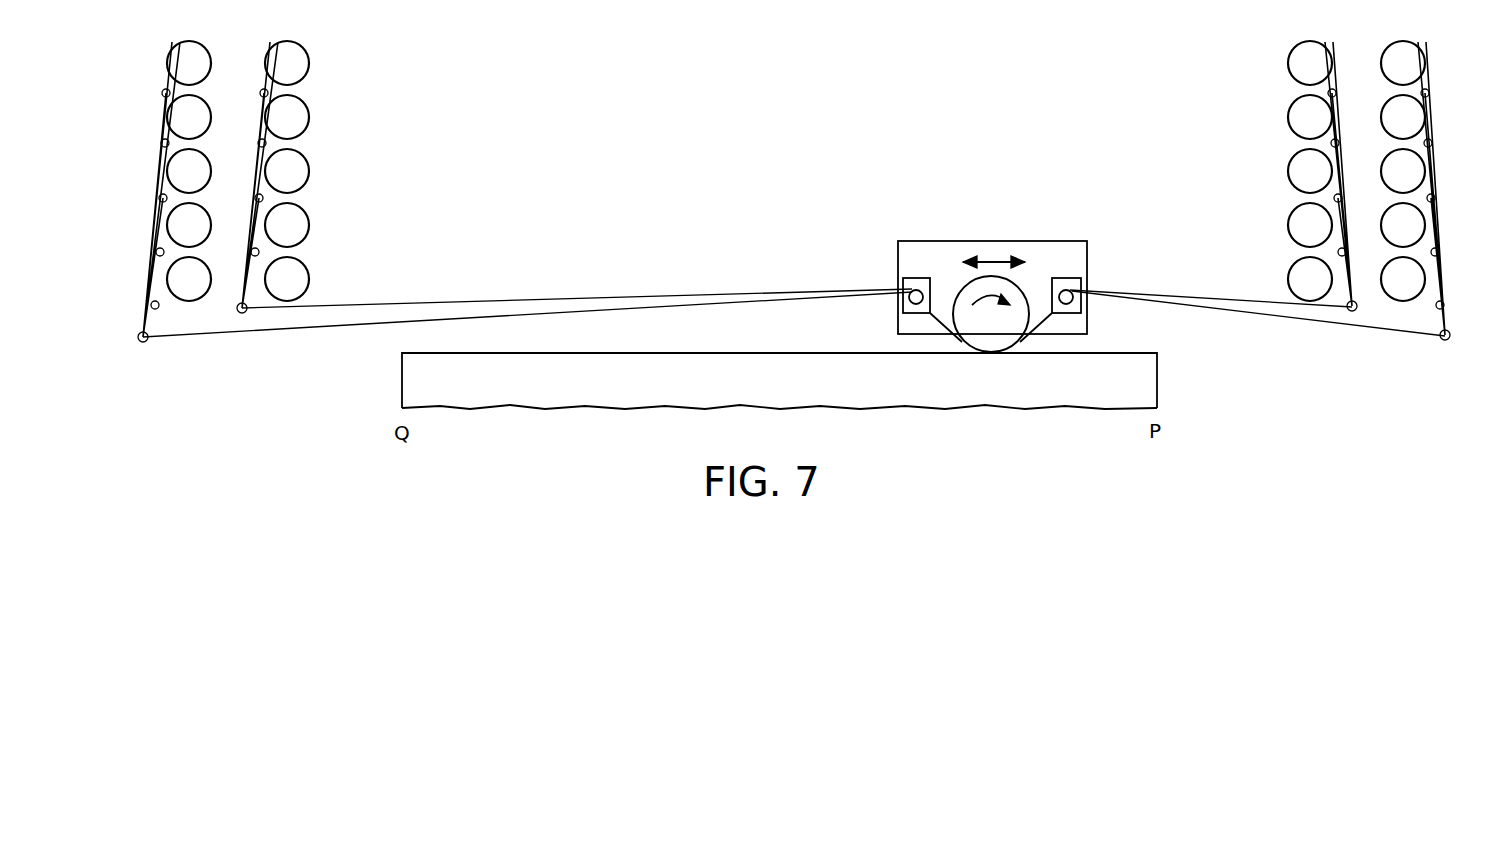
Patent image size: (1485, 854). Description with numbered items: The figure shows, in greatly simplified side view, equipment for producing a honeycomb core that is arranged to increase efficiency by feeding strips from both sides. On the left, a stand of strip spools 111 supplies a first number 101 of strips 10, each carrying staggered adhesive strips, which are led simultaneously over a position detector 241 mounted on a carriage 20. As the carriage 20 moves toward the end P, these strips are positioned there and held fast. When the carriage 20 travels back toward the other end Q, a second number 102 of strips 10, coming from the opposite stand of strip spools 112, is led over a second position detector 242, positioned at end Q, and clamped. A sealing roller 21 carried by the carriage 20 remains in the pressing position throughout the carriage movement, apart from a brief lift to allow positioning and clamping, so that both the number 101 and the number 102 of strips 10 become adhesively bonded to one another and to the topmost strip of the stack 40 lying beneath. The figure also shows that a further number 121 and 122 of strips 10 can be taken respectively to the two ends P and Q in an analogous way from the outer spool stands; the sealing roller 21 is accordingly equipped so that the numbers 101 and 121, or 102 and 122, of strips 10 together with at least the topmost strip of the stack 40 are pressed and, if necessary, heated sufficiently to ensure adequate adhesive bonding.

The strip 10 is at (792, 191).
The stand of strip spools 111 is at (306, 158).
The stand of strip spools 112 is at (1290, 165).
The first number of strips 101 is at (325, 315).
The second number of strips 102 is at (1308, 312).
The further number of strips 121 is at (187, 340).
The further number of strips 122 is at (1408, 340).
The carriage 20 is at (989, 272).
The sealing roller 21 is at (972, 292).
The position detector 241 is at (913, 278).
The second position detector 242 is at (1068, 278).
The stack 40 is at (1112, 380).